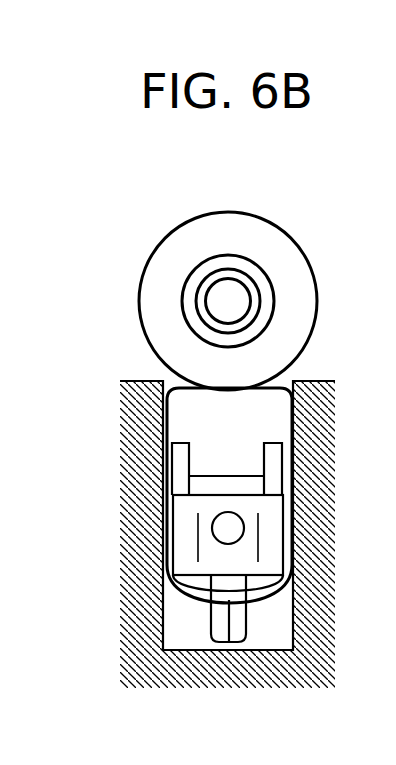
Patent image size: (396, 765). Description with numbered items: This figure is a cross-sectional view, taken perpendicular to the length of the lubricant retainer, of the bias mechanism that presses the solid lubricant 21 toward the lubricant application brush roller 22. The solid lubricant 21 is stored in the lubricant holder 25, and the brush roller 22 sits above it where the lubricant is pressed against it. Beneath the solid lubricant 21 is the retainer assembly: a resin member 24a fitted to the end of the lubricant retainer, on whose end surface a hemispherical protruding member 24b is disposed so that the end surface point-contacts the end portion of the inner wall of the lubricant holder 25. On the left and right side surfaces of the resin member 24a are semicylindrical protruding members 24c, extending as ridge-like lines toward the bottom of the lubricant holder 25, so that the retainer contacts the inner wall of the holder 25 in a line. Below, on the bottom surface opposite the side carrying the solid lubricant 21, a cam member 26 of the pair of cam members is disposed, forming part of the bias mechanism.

The solid lubricant 21 is at (270, 402).
The lubricant application brush roller 22 is at (258, 223).
The resin member 24a is at (180, 543).
The protruding member 24b is at (237, 528).
The semicylindrical protruding members 24c is at (180, 463).
The lubricant holder 25 is at (310, 463).
The cam member 26 is at (242, 620).